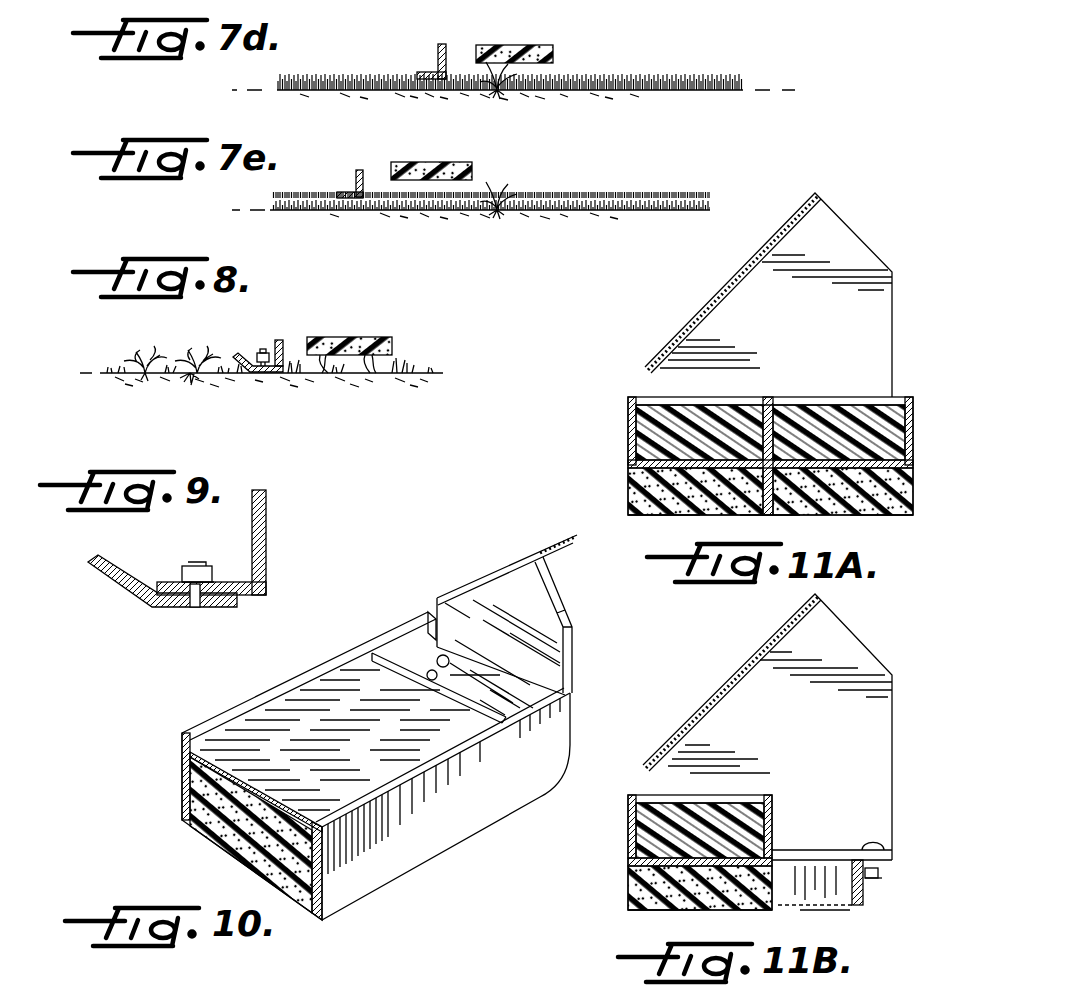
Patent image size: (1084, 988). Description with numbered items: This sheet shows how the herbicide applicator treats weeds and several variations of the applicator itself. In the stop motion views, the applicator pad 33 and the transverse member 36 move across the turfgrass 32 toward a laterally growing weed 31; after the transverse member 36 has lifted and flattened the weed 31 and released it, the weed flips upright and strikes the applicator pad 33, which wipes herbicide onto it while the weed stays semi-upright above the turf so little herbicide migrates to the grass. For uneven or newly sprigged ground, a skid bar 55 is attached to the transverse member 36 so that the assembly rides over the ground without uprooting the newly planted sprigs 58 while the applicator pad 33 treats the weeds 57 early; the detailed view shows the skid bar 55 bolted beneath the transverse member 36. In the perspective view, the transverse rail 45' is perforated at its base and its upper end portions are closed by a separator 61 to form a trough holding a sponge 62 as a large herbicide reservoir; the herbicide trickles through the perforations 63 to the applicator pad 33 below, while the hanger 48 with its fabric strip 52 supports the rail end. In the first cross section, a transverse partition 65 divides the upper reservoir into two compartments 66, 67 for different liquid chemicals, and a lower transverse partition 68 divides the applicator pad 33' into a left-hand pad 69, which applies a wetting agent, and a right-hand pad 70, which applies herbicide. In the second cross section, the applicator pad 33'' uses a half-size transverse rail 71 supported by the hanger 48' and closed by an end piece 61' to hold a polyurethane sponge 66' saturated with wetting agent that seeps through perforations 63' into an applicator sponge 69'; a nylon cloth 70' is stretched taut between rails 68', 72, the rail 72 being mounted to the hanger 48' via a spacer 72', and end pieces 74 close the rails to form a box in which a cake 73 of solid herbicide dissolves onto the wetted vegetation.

In FIG. 7D, the weed 31 is at (508, 72).
In FIG. 7E, the weed 31 is at (508, 186).
In FIG. 7D, the turfgrass 32 is at (352, 72).
In FIG. 7E, the turfgrass 32 is at (404, 214).
In FIG. 7D, the applicator pad 33 is at (536, 37).
In FIG. 7E, the applicator pad 33 is at (431, 147).
In FIG. 8, the applicator pad 33 is at (364, 339).
In FIG. 10, the applicator pad 33 is at (218, 835).
In FIG. 11A, the applicator pad 33' is at (730, 485).
In FIG. 11B, the applicator pad 33'' is at (649, 888).
In FIG. 7D, the transverse member 36 is at (428, 72).
In FIG. 7E, the transverse member 36 is at (346, 190).
In FIG. 8, the transverse member 36 is at (297, 322).
In FIG. 9, the transverse member 36 is at (268, 508).
In FIG. 8, the skid bar 55 is at (243, 358).
In FIG. 9, the skid bar 55 is at (118, 590).
In FIG. 8, the weeds 57 is at (198, 350).
In FIG. 8, the sprigs 58 is at (188, 378).
In FIG. 10, the transverse rail 45' is at (376, 766).
In FIG. 11A, the transverse rail 45' is at (730, 456).
In FIG. 10, the mounting bracket 48 is at (500, 625).
In FIG. 11A, the mounting bracket 48 is at (780, 295).
In FIG. 11B, the hanger 48' is at (787, 727).
In FIG. 10, the VELCRO fabric strip 52 is at (570, 548).
In FIG. 11A, the VELCRO fabric strip 52 is at (745, 290).
In FIG. 10, the separator 61 is at (428, 651).
In FIG. 11A, the separator 61 is at (785, 416).
In FIG. 11B, the end piece 61' is at (760, 816).
In FIG. 10, the sponge 62 is at (222, 752).
In FIG. 10, the perforations 63 is at (145, 776).
In FIG. 11A, the perforations 63 is at (770, 413).
In FIG. 11B, the perforations 63' is at (700, 809).
In FIG. 11A, the transverse partition 65 is at (760, 396).
In FIG. 11A, the compartment 66 is at (619, 403).
In FIG. 11B, the polyurethane sponge 66' is at (683, 804).
In FIG. 11A, the compartment 67 is at (870, 398).
In FIG. 11A, the lower transverse partition 68 is at (753, 531).
In FIG. 11B, the rail 68' is at (733, 927).
In FIG. 11A, the left-hand pad 69 is at (654, 530).
In FIG. 11B, the applicator sponge 69' is at (641, 925).
In FIG. 11A, the right-hand pad 70 is at (892, 534).
In FIG. 11B, the nylon cloth 70' is at (835, 928).
In FIG. 11B, the transverse rail 71 is at (628, 828).
In FIG. 11B, the rail 72 is at (890, 888).
In FIG. 11B, the spacer 72' is at (901, 843).
In FIG. 11B, the cake of solid herbicide 73 is at (800, 900).
In FIG. 11B, the end piece 74 is at (838, 868).